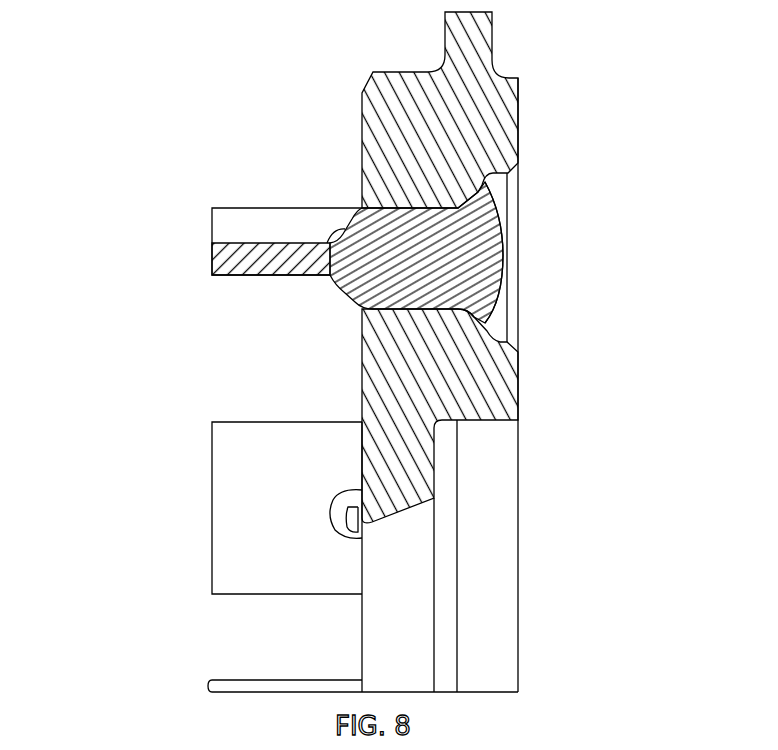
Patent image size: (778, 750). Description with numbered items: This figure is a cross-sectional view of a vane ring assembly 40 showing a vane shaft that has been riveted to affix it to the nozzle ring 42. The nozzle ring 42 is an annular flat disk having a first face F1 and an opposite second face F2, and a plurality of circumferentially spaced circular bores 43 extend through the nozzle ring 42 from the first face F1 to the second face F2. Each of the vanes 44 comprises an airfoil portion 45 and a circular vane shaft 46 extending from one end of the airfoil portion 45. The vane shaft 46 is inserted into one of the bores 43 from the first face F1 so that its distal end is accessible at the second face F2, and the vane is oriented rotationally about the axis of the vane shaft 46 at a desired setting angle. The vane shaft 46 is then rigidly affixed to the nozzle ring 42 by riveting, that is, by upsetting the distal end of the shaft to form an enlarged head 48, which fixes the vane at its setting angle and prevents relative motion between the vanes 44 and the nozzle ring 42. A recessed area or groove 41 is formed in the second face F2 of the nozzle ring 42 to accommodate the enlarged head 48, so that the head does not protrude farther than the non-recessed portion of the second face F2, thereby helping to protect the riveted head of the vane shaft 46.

The ball joint connection assembly 40 is at (218, 56).
The recessed area or groove 41 is at (495, 340).
The nozzle ring 42 is at (393, 90).
The circular bores 43 is at (411, 294).
The vanes 44 is at (206, 292).
The airfoil portion 45 is at (236, 215).
The circular vane shaft 46 is at (452, 228).
The enlarged heads 48 is at (497, 209).
The first face F1 is at (362, 378).
The second face F2 is at (518, 384).